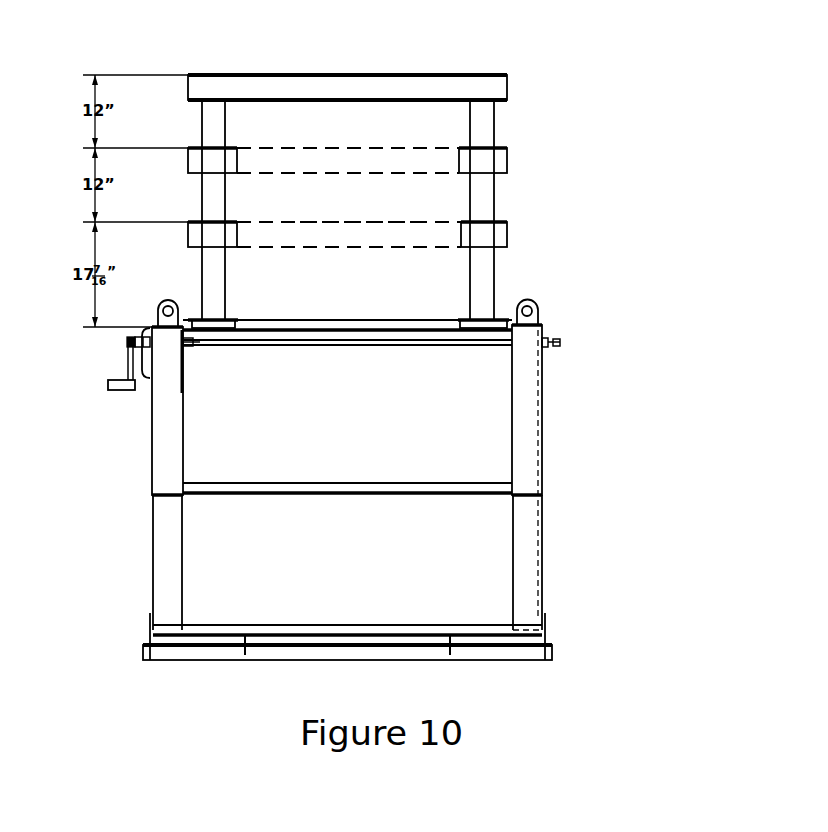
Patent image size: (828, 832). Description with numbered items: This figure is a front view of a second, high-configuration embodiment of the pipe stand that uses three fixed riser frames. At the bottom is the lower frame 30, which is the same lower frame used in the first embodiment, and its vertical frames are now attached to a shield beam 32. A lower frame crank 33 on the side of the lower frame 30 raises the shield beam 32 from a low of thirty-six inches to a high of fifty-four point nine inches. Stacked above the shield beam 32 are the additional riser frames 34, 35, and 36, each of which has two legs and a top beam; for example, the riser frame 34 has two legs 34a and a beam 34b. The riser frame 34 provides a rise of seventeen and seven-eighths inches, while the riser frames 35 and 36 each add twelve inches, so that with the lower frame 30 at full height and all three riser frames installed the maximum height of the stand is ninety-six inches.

The lower frame 30 is at (577, 442).
The shield beam 32 is at (355, 327).
The lower frame crank 33 is at (138, 357).
The riser frame 34 is at (510, 237).
The legs 34a is at (217, 287).
The beam 34b is at (413, 220).
The riser frame 35 is at (507, 164).
The riser frame 36 is at (382, 75).